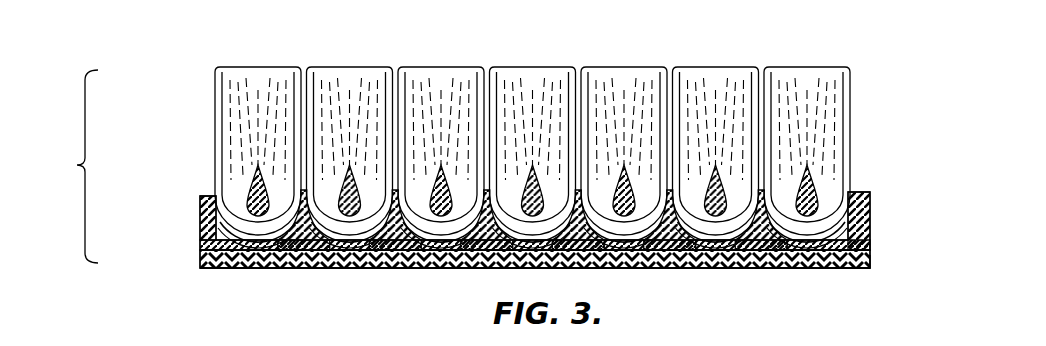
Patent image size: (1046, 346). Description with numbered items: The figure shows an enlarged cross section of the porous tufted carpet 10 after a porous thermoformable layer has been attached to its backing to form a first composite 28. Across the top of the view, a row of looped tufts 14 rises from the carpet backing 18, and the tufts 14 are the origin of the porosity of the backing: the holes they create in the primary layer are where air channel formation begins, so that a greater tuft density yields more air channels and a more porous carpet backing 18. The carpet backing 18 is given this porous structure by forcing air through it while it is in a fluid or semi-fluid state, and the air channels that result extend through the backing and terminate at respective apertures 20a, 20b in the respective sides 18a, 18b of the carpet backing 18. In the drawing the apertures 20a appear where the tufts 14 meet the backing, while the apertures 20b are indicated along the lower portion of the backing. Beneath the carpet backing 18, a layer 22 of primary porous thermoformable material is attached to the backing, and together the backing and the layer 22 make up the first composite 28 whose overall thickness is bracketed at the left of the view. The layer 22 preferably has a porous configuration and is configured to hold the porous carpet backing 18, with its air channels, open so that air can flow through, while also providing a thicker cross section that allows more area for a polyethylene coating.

The carpet 10 is at (194, 112).
The tufts 14 is at (858, 93).
The carpet backing 18 is at (196, 246).
The side of the carpet backing 18a is at (857, 193).
The side of the carpet backing 18b is at (859, 269).
The apertures 20a is at (301, 192).
The apertures 20b is at (307, 268).
The layer of primary porous thermoformable material 22 is at (872, 256).
The first composite 28 is at (74, 166).